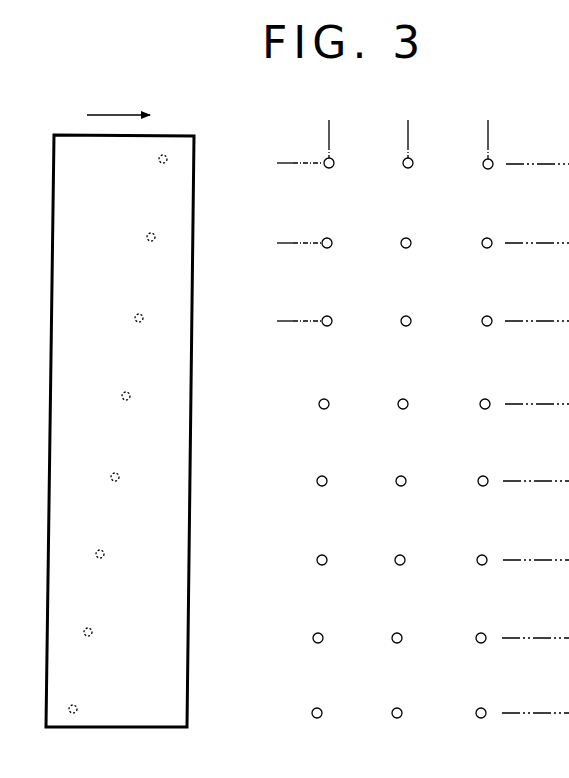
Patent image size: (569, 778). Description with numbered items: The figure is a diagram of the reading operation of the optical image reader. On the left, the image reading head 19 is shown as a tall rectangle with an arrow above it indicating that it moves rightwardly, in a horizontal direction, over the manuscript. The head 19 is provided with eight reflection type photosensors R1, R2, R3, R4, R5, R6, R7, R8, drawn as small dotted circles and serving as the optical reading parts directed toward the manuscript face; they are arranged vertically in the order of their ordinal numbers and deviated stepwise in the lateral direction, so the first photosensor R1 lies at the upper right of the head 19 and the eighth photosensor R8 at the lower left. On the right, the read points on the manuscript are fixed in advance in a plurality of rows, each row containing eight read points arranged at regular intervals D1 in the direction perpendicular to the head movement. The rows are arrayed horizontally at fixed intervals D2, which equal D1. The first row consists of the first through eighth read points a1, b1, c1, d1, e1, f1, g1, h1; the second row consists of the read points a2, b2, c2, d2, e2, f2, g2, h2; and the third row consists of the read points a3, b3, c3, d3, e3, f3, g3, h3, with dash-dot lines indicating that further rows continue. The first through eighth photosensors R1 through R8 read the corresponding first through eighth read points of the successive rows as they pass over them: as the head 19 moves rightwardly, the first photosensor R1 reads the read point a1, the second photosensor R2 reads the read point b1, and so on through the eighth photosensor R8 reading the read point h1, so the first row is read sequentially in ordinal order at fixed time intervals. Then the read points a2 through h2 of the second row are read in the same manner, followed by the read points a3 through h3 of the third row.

The image reading head 19 is at (54, 167).
The first photosensor R1 is at (158, 159).
The second photosensor R2 is at (149, 233).
The third photosensor R3 is at (137, 314).
The fourth photosensor R4 is at (124, 392).
The fifth photosensor R5 is at (118, 473).
The sixth photosensor R6 is at (103, 550).
The seventh photosensor R7 is at (91, 628).
The eighth photosensor R8 is at (76, 705).
The vertical read point interval D1 is at (285, 164).
The horizontal row interval D2 is at (330, 133).
The first read point of first row a1 is at (333, 166).
The first read point of second row a2 is at (412, 166).
The first read point of third row a3 is at (492, 167).
The second read point of first row b1 is at (331, 246).
The second read point of second row b2 is at (410, 246).
The second read point of third row b3 is at (491, 246).
The third read point of first row c1 is at (331, 324).
The third read point of second row c2 is at (410, 324).
The third read point of third row c3 is at (491, 324).
The fourth read point of first row d1 is at (328, 407).
The fourth read point of second row d2 is at (407, 407).
The fourth read point of third row d3 is at (489, 407).
The fifth read point of first row e1 is at (326, 484).
The fifth read point of second row e2 is at (405, 484).
The fifth read point of third row e3 is at (487, 484).
The sixth read point of first row f1 is at (326, 563).
The sixth read point of second row f2 is at (404, 563).
The sixth read point of third row f3 is at (486, 563).
The seventh read point of first row g1 is at (322, 641).
The seventh read point of second row g2 is at (401, 641).
The seventh read point of third row g3 is at (485, 641).
The eighth read point of first row h1 is at (321, 716).
The eighth read point of second row h2 is at (401, 716).
The eighth read point of third row h3 is at (485, 716).